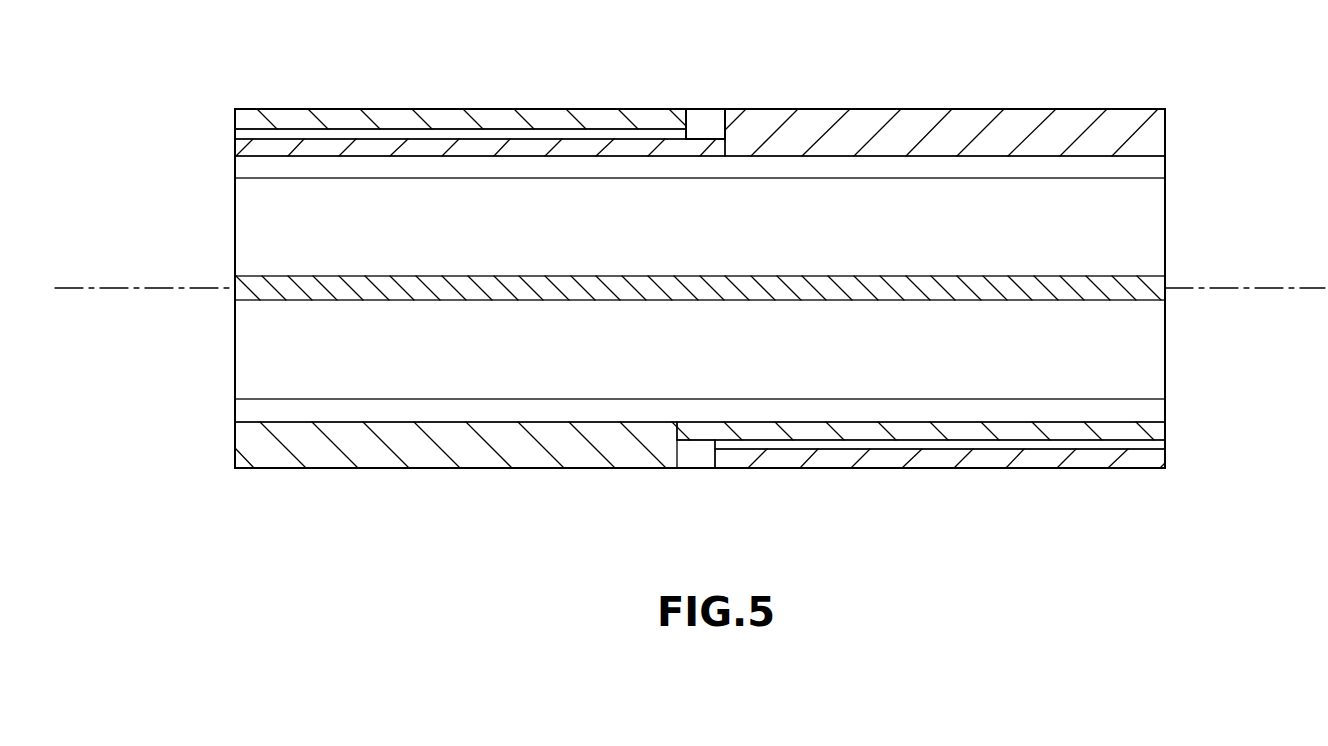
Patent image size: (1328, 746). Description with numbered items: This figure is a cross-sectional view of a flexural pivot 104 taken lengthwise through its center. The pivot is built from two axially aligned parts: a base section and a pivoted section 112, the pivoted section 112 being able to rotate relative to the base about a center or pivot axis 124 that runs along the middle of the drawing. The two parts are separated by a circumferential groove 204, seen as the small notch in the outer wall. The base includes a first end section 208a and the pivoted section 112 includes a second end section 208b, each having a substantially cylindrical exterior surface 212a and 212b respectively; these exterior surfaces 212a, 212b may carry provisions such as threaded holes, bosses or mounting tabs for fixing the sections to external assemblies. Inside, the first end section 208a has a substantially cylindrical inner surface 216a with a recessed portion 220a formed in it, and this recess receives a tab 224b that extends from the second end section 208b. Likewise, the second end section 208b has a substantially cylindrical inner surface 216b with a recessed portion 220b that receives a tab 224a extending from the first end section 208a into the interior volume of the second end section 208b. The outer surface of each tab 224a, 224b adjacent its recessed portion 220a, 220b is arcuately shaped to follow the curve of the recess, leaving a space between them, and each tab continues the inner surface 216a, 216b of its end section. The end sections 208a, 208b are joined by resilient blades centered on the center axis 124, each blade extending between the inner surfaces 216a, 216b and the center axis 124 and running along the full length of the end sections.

The flexural pivot 104 is at (1108, 108).
The pivoted section 112 is at (404, 468).
The center or pivot axis 124 is at (165, 288).
The circumferential groove 204 is at (719, 132).
The first end section 208a is at (937, 108).
The second end section 208b is at (255, 468).
The exterior surface 212a is at (1047, 468).
The exterior surface 212b is at (570, 468).
The inner surface 216a is at (1145, 165).
The inner surface 216b is at (243, 406).
The recessed portion 220a is at (1165, 444).
The recessed portion 220b is at (235, 134).
The tab 224a is at (333, 148).
The tab 224b is at (1097, 422).